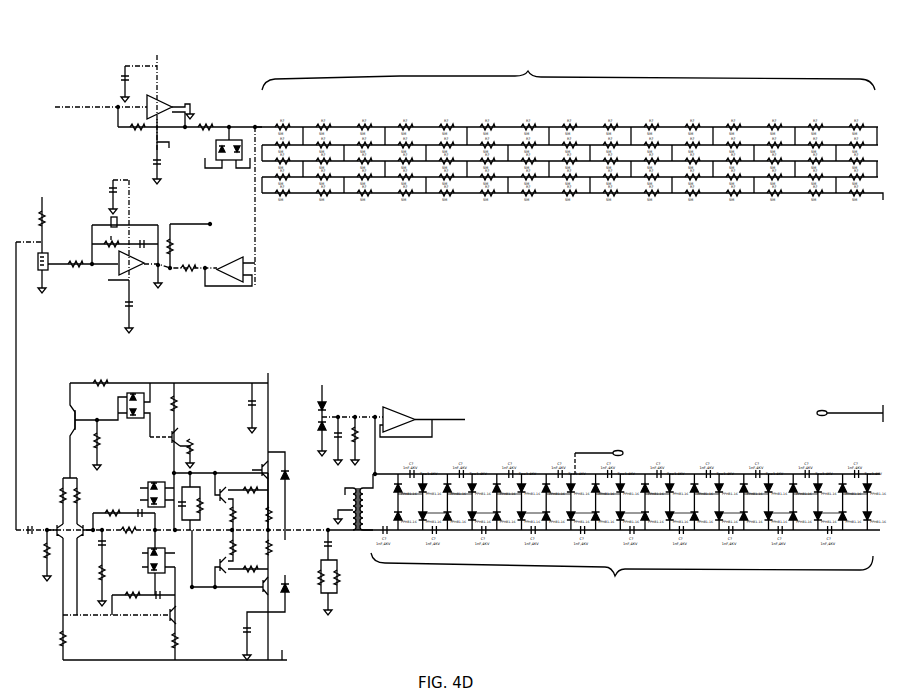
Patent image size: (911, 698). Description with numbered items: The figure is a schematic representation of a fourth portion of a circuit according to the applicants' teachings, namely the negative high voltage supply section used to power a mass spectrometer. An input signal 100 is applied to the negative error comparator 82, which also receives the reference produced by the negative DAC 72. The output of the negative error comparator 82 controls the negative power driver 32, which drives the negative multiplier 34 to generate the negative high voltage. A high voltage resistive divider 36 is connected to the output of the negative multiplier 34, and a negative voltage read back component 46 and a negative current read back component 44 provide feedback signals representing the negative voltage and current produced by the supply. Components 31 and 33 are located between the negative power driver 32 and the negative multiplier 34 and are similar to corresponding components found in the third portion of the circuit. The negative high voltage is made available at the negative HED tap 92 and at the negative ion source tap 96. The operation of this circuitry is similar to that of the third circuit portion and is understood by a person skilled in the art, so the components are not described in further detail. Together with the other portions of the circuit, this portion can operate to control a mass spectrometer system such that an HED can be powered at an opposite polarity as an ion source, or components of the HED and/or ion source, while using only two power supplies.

The high voltage resistive divider 36 is at (569, 122).
The negative voltage read back component 46 is at (158, 167).
The negative error comparator 82 is at (97, 192).
The input signal 100 is at (54, 209).
The negative DAC 72 is at (189, 239).
The negative current read back component 44 is at (390, 426).
The component similar to component 23 33 is at (357, 512).
The component similar to component 21 31 is at (330, 572).
The negative power driver 32 is at (338, 634).
The negative multiplier 34 is at (608, 498).
The negative ion source tap 96 is at (591, 447).
The negative HED tap 92 is at (850, 408).